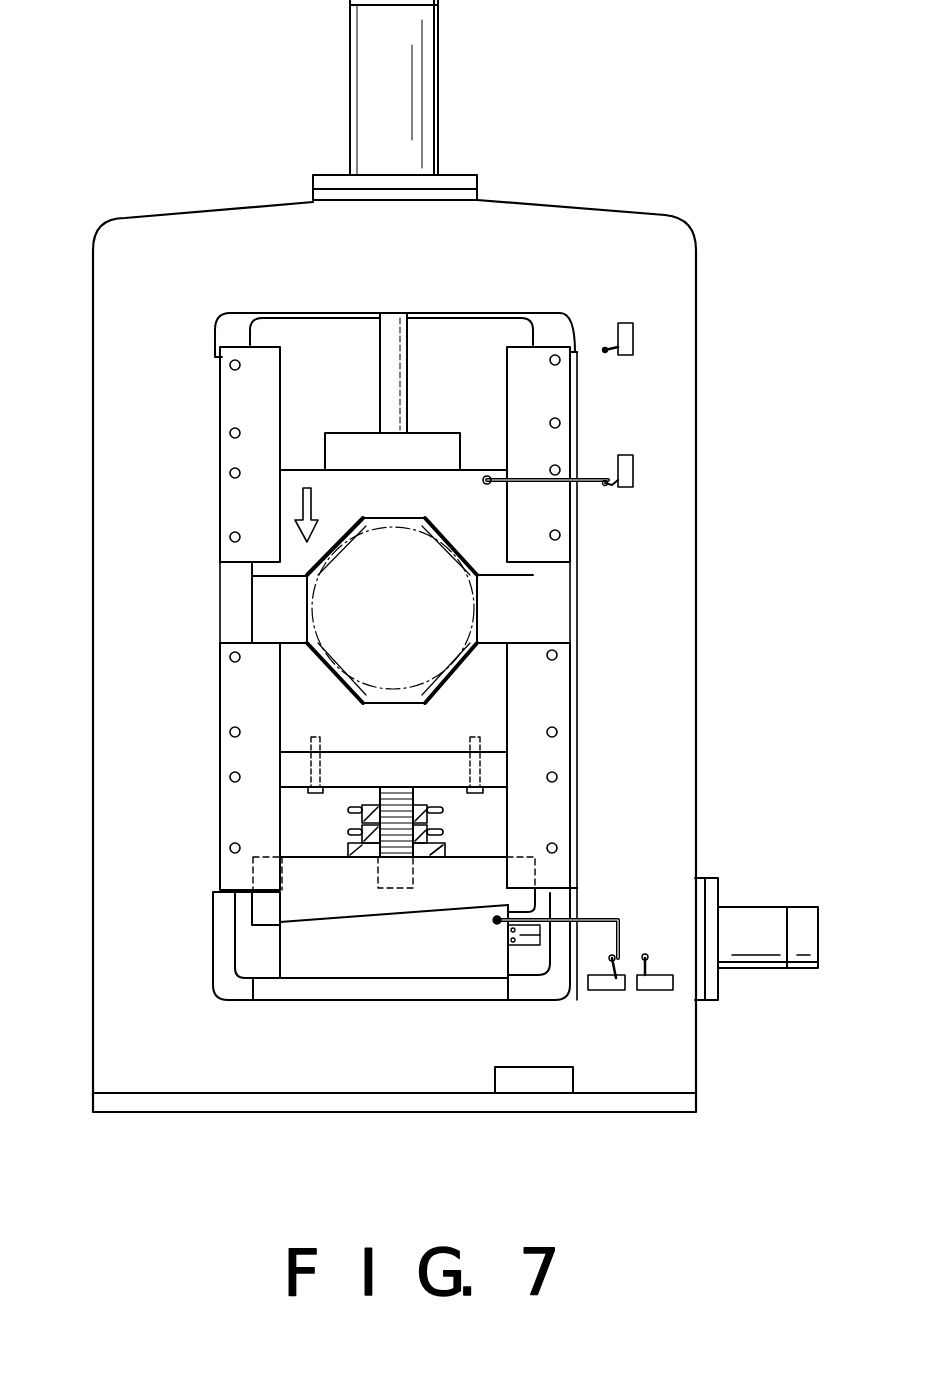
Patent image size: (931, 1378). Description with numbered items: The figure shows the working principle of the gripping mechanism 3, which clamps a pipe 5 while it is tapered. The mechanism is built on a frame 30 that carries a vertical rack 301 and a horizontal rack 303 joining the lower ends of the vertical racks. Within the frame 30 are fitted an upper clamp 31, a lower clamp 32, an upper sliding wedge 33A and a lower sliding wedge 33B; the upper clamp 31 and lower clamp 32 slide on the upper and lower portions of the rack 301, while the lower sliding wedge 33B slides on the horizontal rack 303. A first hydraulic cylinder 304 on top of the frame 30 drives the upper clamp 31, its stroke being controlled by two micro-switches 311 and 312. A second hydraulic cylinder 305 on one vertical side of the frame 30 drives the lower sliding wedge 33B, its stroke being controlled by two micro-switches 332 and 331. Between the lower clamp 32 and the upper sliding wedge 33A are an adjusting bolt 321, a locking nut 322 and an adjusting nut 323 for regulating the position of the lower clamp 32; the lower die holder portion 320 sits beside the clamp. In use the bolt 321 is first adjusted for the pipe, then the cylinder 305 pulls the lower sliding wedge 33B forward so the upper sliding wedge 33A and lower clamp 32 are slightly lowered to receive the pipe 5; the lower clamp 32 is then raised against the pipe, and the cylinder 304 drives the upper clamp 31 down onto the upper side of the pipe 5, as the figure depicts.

The gripping mechanism 3 is at (692, 216).
The frame 30 is at (125, 218).
The first hydraulic cylinder 304 is at (440, 75).
The second hydraulic cylinder 305 is at (765, 907).
The micro-switch 311 is at (626, 322).
The micro-switch 312 is at (626, 455).
The upper clamp 31 is at (268, 576).
The vertical rack 301 is at (247, 625).
The pipe 5 is at (478, 610).
The lower die holder 320 is at (545, 612).
The lower clamp 32 is at (472, 672).
The adjusting bolt 321 is at (405, 797).
The locking nut 322 is at (443, 810).
The adjusting nut 323 is at (350, 832).
The upper sliding wedge 33A is at (268, 905).
The lower sliding wedge 33B is at (455, 963).
The horizontal rack 303 is at (395, 993).
The micro-switch 331 is at (660, 992).
The micro-switch 332 is at (608, 992).